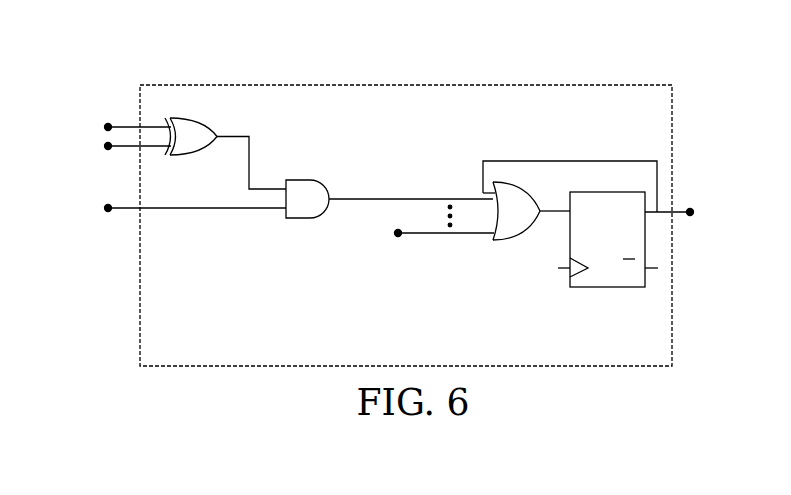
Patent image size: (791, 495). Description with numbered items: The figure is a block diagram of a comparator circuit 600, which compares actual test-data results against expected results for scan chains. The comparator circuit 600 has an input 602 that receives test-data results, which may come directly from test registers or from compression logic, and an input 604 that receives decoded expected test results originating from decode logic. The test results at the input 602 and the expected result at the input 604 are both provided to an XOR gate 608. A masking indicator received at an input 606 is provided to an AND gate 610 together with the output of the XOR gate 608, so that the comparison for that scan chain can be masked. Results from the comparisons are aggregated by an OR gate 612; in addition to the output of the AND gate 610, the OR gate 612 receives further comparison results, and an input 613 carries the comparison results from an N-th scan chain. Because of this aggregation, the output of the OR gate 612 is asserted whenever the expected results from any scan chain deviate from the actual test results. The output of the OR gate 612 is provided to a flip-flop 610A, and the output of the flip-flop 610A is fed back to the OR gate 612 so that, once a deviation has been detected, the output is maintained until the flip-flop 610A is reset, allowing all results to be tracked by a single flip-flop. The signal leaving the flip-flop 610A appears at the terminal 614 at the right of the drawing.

The comparator circuit 600 is at (609, 58).
The input 602 is at (114, 127).
The input 604 is at (114, 146).
The input 606 is at (172, 208).
The XOR gate 608 is at (192, 123).
The AND gate 610 is at (308, 180).
The flip-flop 610A is at (608, 287).
The OR gate 612 is at (503, 240).
The input 613 is at (423, 225).
The output signal 614 is at (692, 212).